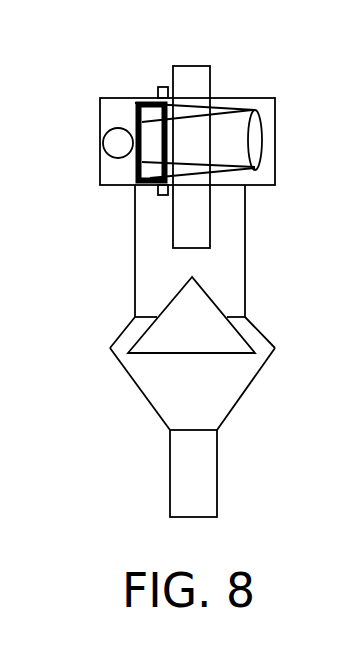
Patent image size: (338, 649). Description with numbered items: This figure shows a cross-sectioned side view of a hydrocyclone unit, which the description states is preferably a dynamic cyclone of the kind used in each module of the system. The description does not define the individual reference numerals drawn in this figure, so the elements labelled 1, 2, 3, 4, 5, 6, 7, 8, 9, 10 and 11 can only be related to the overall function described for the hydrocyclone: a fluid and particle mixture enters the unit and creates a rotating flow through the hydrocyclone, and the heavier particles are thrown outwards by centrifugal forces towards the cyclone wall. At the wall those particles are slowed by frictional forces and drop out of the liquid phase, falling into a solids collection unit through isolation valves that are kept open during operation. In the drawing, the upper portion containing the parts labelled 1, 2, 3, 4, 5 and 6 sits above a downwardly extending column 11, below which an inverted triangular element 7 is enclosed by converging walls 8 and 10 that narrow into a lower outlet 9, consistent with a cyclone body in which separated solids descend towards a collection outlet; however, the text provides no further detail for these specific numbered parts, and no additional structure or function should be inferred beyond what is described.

The light source 1 is at (115, 143).
The housing 2 is at (98, 110).
The frame / holder 3 is at (136, 106).
The mounting tabs 4 is at (156, 88).
The vertical support bar 5 is at (213, 78).
The lens / light cone 6 is at (258, 126).
The triangular deflector 7 is at (220, 297).
The upper funnel wall 8 is at (263, 326).
The outlet channel 9 is at (219, 450).
The lower funnel wall 10 is at (132, 392).
The column 11 is at (133, 223).